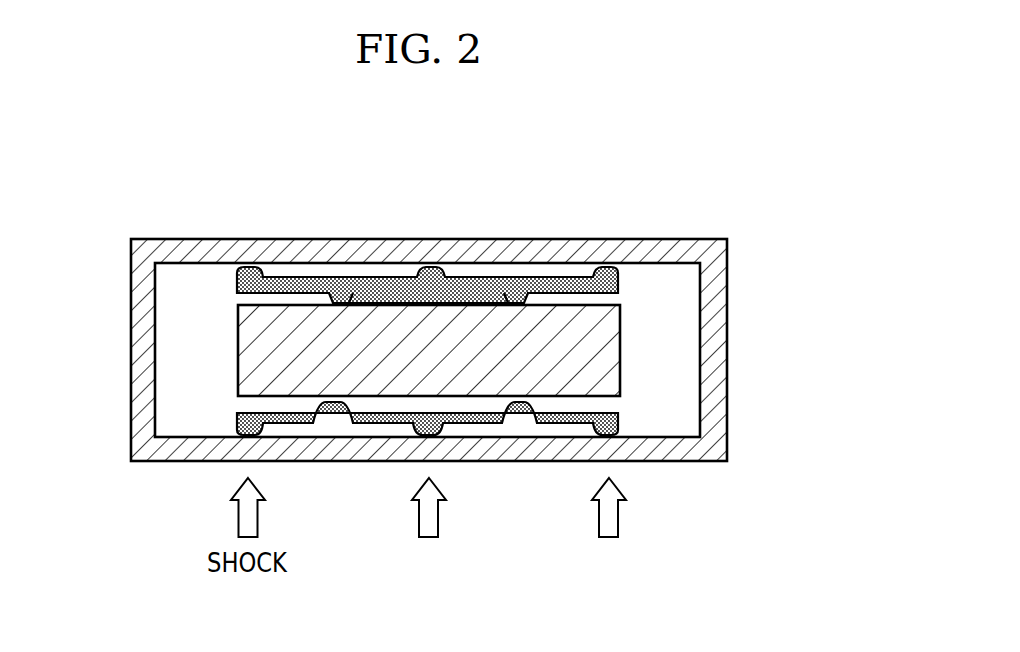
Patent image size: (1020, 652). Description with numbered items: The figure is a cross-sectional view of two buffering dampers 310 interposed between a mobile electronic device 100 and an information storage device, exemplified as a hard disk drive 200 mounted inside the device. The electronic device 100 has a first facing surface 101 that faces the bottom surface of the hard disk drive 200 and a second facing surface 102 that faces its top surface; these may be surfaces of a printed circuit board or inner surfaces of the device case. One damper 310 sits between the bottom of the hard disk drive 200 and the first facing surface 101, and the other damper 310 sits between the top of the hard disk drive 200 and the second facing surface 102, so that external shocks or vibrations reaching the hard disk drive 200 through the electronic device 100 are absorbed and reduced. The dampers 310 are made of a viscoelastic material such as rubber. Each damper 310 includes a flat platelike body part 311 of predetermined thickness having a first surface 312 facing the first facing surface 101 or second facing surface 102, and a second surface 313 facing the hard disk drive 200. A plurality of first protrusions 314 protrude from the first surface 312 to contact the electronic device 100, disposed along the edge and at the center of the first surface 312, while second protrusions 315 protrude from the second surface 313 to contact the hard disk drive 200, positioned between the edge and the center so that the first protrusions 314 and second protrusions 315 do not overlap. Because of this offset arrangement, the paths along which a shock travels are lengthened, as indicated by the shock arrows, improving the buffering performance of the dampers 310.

The mobile electronic device 100 is at (686, 250).
The first facing surface 101 is at (671, 437).
The second facing surface 102 is at (669, 263).
The hard disk drive 200 is at (262, 352).
The buffering damper 310 is at (207, 283).
The body part 311 is at (470, 285).
The first surface 312 is at (402, 282).
The second surface 313 is at (236, 304).
The first protrusion 314 is at (260, 268).
The second protrusion 315 is at (338, 300).